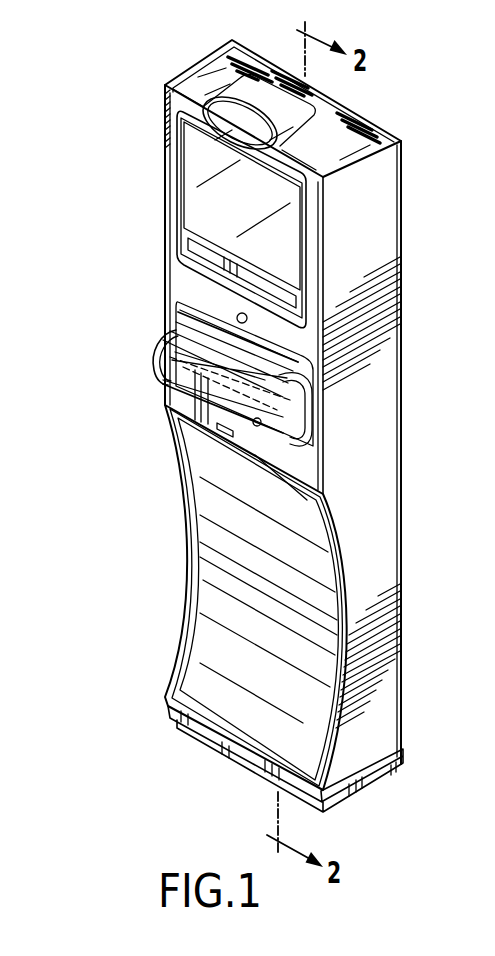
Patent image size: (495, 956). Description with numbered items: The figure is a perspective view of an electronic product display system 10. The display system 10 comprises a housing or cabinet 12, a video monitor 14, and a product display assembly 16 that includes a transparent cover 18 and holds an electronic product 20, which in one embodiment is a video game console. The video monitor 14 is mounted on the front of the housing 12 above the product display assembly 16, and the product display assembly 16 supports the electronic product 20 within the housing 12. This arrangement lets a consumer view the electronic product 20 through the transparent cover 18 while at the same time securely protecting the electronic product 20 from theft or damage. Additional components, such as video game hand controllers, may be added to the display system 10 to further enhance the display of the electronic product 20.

The display system 10 is at (132, 102).
The housing 12 is at (388, 234).
The video monitor 14 is at (203, 168).
The product display assembly 16 is at (144, 293).
The transparent cover 18 is at (158, 350).
The electronic product 20 is at (290, 400).